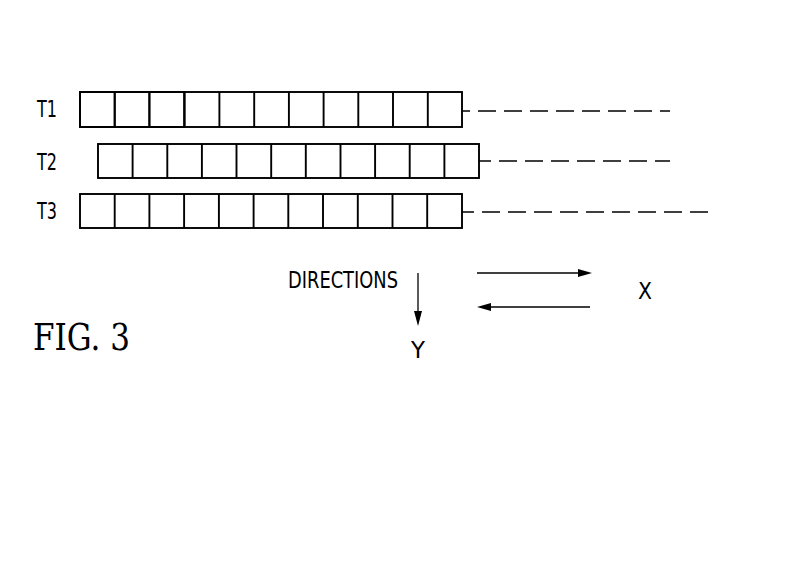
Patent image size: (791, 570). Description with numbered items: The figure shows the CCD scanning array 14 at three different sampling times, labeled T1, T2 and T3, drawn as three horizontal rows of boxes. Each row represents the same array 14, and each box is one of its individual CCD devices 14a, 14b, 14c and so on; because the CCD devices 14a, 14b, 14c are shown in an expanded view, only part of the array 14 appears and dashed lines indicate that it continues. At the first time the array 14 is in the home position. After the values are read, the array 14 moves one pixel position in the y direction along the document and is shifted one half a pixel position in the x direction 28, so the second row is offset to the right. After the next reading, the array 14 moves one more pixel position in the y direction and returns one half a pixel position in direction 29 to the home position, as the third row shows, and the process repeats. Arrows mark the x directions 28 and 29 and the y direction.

The CCD scanning array 14 is at (396, 117).
The CCD device 14a is at (99, 91).
The CCD device 14b is at (137, 91).
The CCD device 14c is at (172, 91).
The direction 28 is at (550, 274).
The direction 29 is at (550, 309).